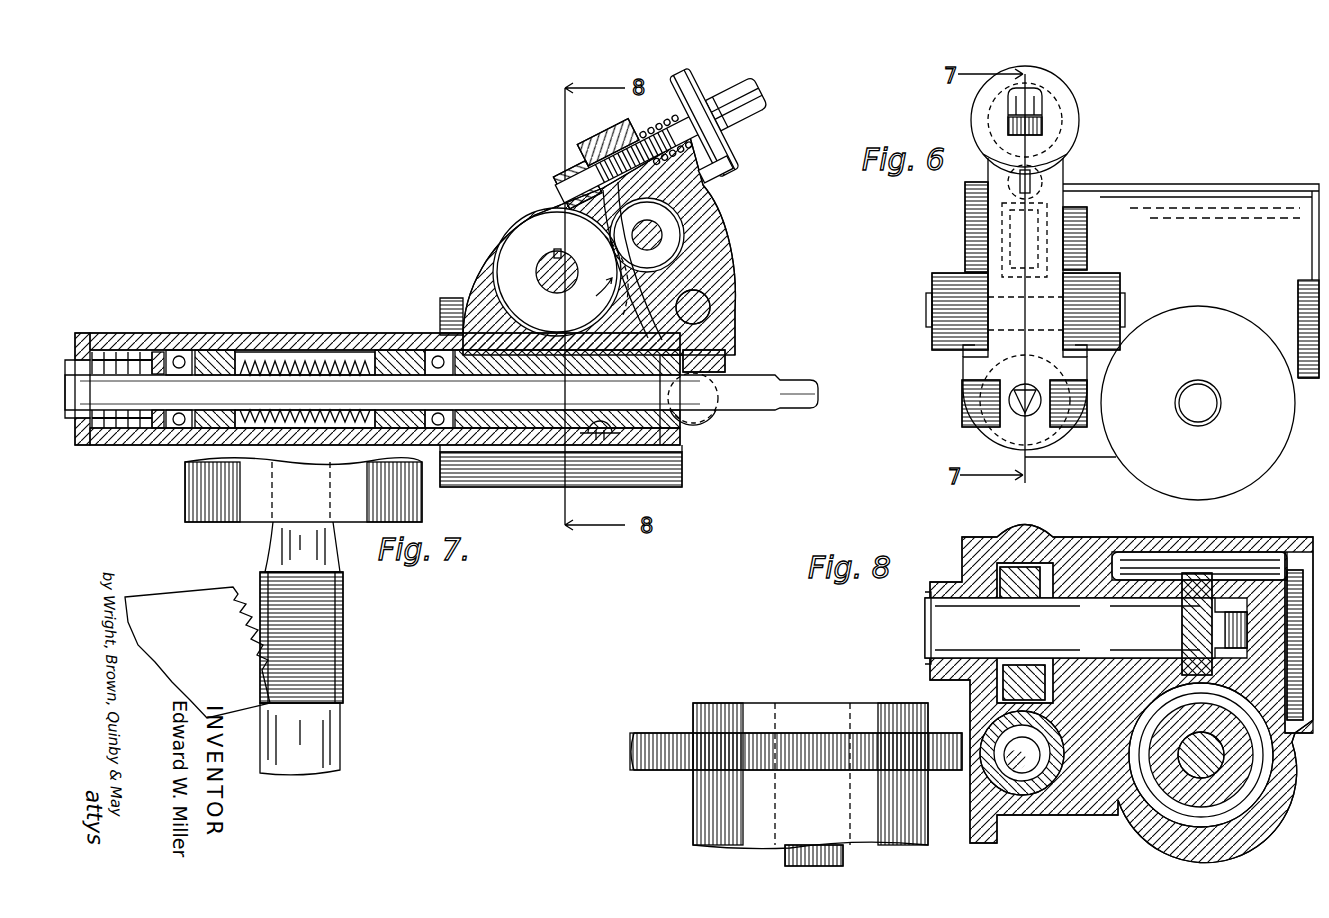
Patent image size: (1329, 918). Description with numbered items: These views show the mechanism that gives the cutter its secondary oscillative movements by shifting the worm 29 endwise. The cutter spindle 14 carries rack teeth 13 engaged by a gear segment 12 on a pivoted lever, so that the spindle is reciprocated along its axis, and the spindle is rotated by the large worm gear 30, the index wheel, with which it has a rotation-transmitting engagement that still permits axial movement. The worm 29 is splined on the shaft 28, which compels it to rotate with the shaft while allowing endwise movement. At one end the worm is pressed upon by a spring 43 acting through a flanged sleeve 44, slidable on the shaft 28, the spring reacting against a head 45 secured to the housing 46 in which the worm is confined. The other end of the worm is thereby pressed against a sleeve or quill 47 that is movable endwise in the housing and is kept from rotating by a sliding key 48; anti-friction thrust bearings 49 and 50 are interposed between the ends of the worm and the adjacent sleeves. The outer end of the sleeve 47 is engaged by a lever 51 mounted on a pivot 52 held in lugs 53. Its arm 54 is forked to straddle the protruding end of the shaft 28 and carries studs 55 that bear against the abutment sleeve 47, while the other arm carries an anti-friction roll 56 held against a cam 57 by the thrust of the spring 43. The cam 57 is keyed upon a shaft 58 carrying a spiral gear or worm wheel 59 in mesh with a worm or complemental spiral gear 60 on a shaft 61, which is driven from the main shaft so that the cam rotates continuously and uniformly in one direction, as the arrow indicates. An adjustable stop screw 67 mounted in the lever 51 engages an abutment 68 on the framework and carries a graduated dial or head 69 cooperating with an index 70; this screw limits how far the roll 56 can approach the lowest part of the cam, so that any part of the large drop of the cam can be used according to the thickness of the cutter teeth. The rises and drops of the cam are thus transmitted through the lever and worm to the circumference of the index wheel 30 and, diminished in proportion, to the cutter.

In FIG. 7, the gear segment 12 is at (222, 610).
In FIG. 7, the rack teeth 13 is at (340, 648).
In FIG. 7, the cutter spindle 14 is at (335, 733).
In FIG. 8, the cutter spindle 14 is at (785, 858).
In FIG. 7, the shaft 28 is at (268, 378).
In FIG. 6, the shaft 28 is at (1014, 404).
In FIG. 8, the shaft 28 is at (1028, 767).
In FIG. 7, the worm 29 is at (335, 358).
In FIG. 8, the worm 29 is at (1012, 783).
In FIG. 7, the worm gear 30 is at (198, 500).
In FIG. 8, the worm gear 30 is at (652, 728).
In FIG. 7, the spring 43 is at (122, 358).
In FIG. 7, the flanged sleeve 44 is at (160, 354).
In FIG. 7, the head 45 is at (80, 336).
In FIG. 7, the housing 46 is at (245, 388).
In FIG. 7, the sleeve or quill 47 is at (540, 432).
In FIG. 7, the sliding key 48 is at (603, 436).
In FIG. 7, the anti-friction thrust bearing 49 is at (184, 355).
In FIG. 7, the anti-friction thrust bearing 50 is at (436, 358).
In FIG. 7, the lever 51 is at (700, 255).
In FIG. 6, the lever 51 is at (1000, 190).
In FIG. 8, the lever 51 is at (1119, 694).
In FIG. 7, the pivot 52 is at (712, 300).
In FIG. 6, the pivot 52 is at (928, 305).
In FIG. 6, the lugs 53 is at (958, 314).
In FIG. 7, the arm 54 is at (725, 362).
In FIG. 6, the arm 54 is at (976, 366).
In FIG. 7, the studs 55 is at (702, 420).
In FIG. 6, the studs 55 is at (962, 399).
In FIG. 7, the anti-friction roll 56 is at (665, 240).
In FIG. 6, the anti-friction roll 56 is at (976, 256).
In FIG. 7, the cam 57 is at (550, 230).
In FIG. 8, the cam 57 is at (1012, 588).
In FIG. 7, the shaft 58 is at (548, 272).
In FIG. 8, the shaft 58 is at (960, 626).
In FIG. 8, the spiral gear or worm wheel 59 is at (1208, 589).
In FIG. 8, the worm or complemental spiral gear 60 is at (1237, 713).
In FIG. 8, the shaft 61 is at (1207, 755).
In FIG. 7, the adjustable stop screw 67 is at (633, 160).
In FIG. 6, the adjustable stop screw 67 is at (1047, 104).
In FIG. 7, the abutment 68 is at (592, 172).
In FIG. 7, the graduated dial or head 69 is at (722, 149).
In FIG. 6, the graduated dial or head 69 is at (1080, 124).
In FIG. 7, the index 70 is at (730, 174).
In FIG. 6, the index 70 is at (1033, 184).